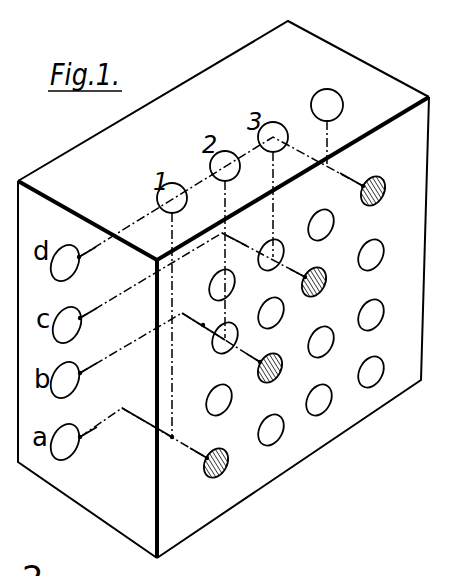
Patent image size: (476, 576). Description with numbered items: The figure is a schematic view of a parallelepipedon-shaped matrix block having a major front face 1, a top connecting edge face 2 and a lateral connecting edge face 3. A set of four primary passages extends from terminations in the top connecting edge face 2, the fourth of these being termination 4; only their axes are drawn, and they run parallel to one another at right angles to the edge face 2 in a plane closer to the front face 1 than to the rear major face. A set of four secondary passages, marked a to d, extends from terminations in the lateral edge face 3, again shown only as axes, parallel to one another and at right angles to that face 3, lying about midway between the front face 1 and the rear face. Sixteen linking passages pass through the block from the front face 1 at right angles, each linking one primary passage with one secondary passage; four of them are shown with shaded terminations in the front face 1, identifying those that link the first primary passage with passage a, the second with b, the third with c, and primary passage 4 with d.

The major front face 1 is at (417, 231).
The top connecting edge face 2 is at (338, 52).
The lateral connecting edge face 3 is at (72, 490).
The primary passage termination 4 is at (320, 122).